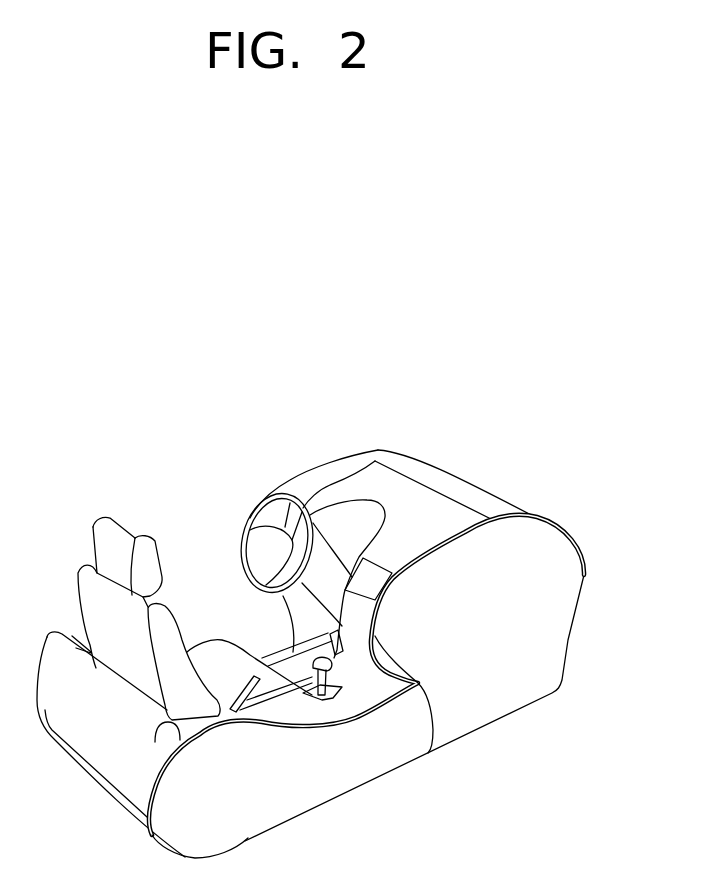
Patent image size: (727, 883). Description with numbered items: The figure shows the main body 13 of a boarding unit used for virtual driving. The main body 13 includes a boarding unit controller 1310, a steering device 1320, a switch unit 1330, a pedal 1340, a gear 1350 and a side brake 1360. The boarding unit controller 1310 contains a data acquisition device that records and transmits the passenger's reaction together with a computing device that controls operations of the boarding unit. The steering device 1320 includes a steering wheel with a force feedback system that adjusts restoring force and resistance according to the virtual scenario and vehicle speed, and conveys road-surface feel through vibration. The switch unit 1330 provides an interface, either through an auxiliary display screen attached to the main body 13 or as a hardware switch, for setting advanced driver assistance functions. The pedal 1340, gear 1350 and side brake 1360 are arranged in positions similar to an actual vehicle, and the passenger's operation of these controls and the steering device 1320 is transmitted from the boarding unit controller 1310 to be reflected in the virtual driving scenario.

The main body 13 is at (135, 437).
The boarding unit controller 1310 is at (462, 493).
The steering device 1320 is at (263, 540).
The switch unit 1330 is at (370, 583).
The pedal 1340 is at (330, 646).
The gear 1350 is at (340, 697).
The side brake 1360 is at (253, 710).